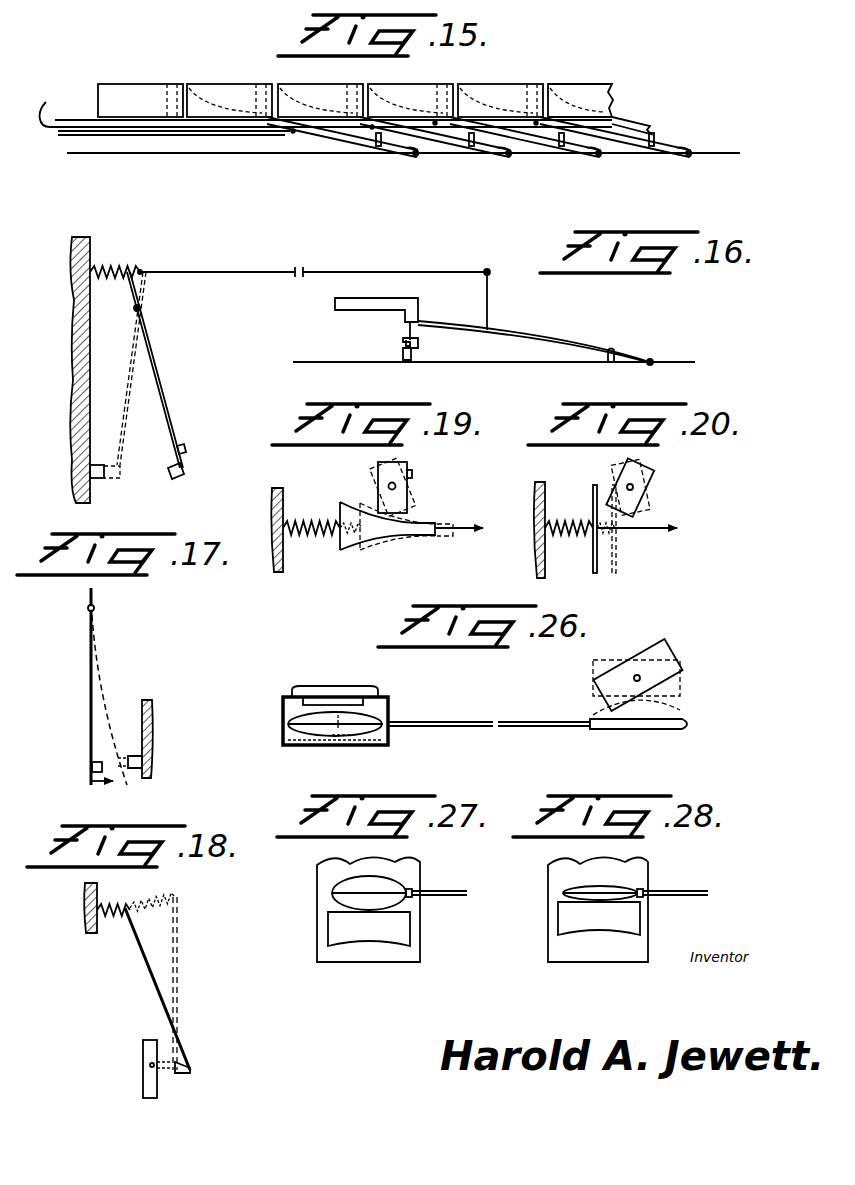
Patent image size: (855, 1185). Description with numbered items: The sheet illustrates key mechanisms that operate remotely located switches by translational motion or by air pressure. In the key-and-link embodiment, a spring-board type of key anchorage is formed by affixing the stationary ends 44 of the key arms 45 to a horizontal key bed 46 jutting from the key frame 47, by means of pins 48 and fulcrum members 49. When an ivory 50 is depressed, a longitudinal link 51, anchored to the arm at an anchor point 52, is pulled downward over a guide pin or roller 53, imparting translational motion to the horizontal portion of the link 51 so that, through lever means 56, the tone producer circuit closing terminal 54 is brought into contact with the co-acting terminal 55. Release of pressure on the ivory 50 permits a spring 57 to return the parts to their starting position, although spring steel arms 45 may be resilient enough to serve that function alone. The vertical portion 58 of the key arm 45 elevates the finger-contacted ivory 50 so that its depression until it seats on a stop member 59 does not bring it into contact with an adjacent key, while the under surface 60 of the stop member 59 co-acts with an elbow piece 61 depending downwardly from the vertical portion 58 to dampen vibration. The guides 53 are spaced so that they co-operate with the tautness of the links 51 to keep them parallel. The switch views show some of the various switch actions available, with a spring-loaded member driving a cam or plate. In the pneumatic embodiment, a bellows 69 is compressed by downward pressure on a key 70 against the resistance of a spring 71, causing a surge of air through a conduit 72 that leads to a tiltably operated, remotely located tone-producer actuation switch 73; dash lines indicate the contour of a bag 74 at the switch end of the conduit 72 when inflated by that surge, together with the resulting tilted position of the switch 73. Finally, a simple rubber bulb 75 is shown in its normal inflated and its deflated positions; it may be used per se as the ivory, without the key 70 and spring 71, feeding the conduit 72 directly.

In FIG. 15, the stationary ends 44 is at (683, 156).
In FIG. 15, the key arms 45 is at (612, 135).
In FIG. 16, the key arms 45 is at (585, 340).
In FIG. 16, the horizontal key bed 46 is at (513, 350).
In FIG. 15, the key frame 47 is at (182, 152).
In FIG. 15, the pins 48 is at (690, 150).
In FIG. 16, the pins 48 is at (655, 362).
In FIG. 15, the fulcrum members 49 is at (655, 135).
In FIG. 16, the fulcrum members 49 is at (606, 352).
In FIG. 15, the ivory 50 is at (203, 90).
In FIG. 16, the ivory 50 is at (337, 298).
In FIG. 15, the longitudinal link 51 is at (60, 118).
In FIG. 16, the longitudinal link 51 is at (417, 255).
In FIG. 16, the anchor point 52 is at (490, 330).
In FIG. 15, the guide pin or roller 53 is at (538, 126).
In FIG. 16, the guide pin or roller 53 is at (497, 255).
In FIG. 16, the circuit closing terminal 54 is at (185, 470).
In FIG. 16, the co-acting terminal 55 is at (106, 466).
In FIG. 16, the lever means 56 is at (158, 370).
In FIG. 16, the spring 57 is at (134, 248).
In FIG. 16, the vertical portion 58 is at (420, 320).
In FIG. 15, the stop member 59 is at (357, 92).
In FIG. 16, the stop member 59 is at (409, 342).
In FIG. 16, the under surface 60 is at (418, 345).
In FIG. 16, the elbow piece 61 is at (404, 356).
In FIG. 26, the bellows 69 is at (370, 723).
In FIG. 26, the key 70 is at (340, 690).
In FIG. 26, the spring 71 is at (390, 742).
In FIG. 26, the conduit 72 is at (512, 725).
In FIG. 27, the conduit 72 is at (446, 896).
In FIG. 28, the conduit 72 is at (670, 896).
In FIG. 26, the tone-producer actuation switch 73 is at (668, 656).
In FIG. 26, the bag 74 is at (683, 713).
In FIG. 27, the rubber bulb 75 is at (400, 883).
In FIG. 28, the rubber bulb 75 is at (630, 884).